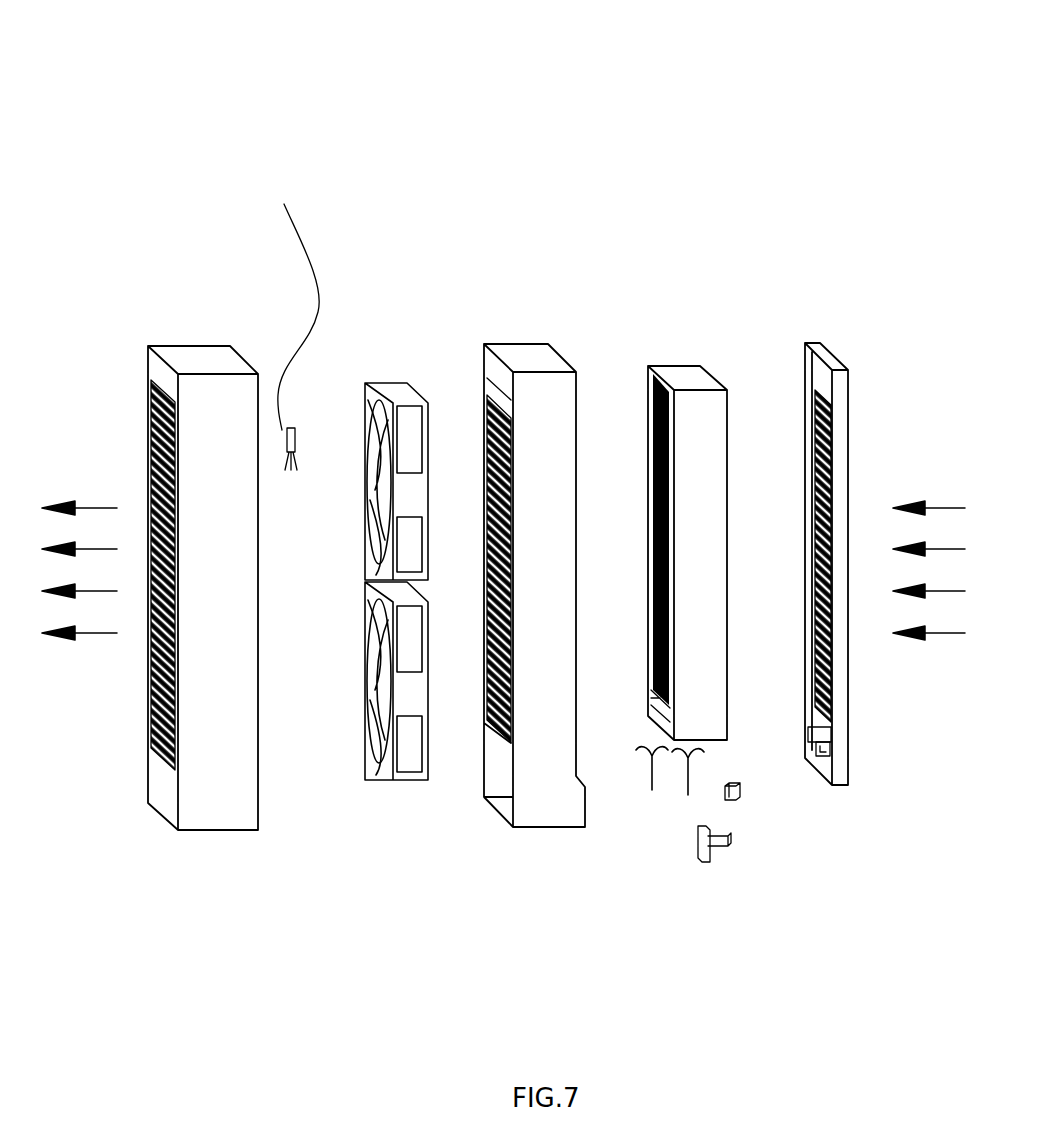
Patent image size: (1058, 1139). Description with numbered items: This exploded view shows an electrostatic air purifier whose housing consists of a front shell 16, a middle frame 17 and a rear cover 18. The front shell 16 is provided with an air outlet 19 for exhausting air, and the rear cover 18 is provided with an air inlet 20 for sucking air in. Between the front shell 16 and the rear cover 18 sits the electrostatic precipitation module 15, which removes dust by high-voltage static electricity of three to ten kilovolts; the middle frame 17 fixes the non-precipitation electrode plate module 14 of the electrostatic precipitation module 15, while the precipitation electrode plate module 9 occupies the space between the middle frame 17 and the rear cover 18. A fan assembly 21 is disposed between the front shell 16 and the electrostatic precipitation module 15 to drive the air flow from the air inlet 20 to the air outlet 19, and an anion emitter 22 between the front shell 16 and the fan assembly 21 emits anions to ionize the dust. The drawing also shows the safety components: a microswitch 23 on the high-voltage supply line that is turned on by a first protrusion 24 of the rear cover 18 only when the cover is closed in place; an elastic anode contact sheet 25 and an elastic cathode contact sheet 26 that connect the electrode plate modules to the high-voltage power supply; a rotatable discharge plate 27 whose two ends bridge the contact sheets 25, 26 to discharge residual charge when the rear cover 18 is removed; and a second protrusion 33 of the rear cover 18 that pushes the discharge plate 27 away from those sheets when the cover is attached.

The precipitation electrode plate module 9 is at (670, 382).
The non-precipitation electrode plate module 14 is at (487, 392).
The electrostatic precipitation module 15 is at (633, 197).
The front shell 16 is at (172, 501).
The middle frame 17 is at (517, 499).
The rear cover 18 is at (837, 493).
The air outlet 19 is at (150, 426).
The air inlet 20 is at (840, 456).
The fan assembly 21 is at (383, 382).
The anion emitter 22 is at (293, 322).
The microswitch 23 is at (715, 850).
The first protrusion 24 is at (838, 758).
The elastic anode contact sheet 25 is at (650, 792).
The elastic cathode contact sheet 26 is at (688, 797).
The discharge plate 27 is at (740, 800).
The second protrusion 33 is at (808, 720).